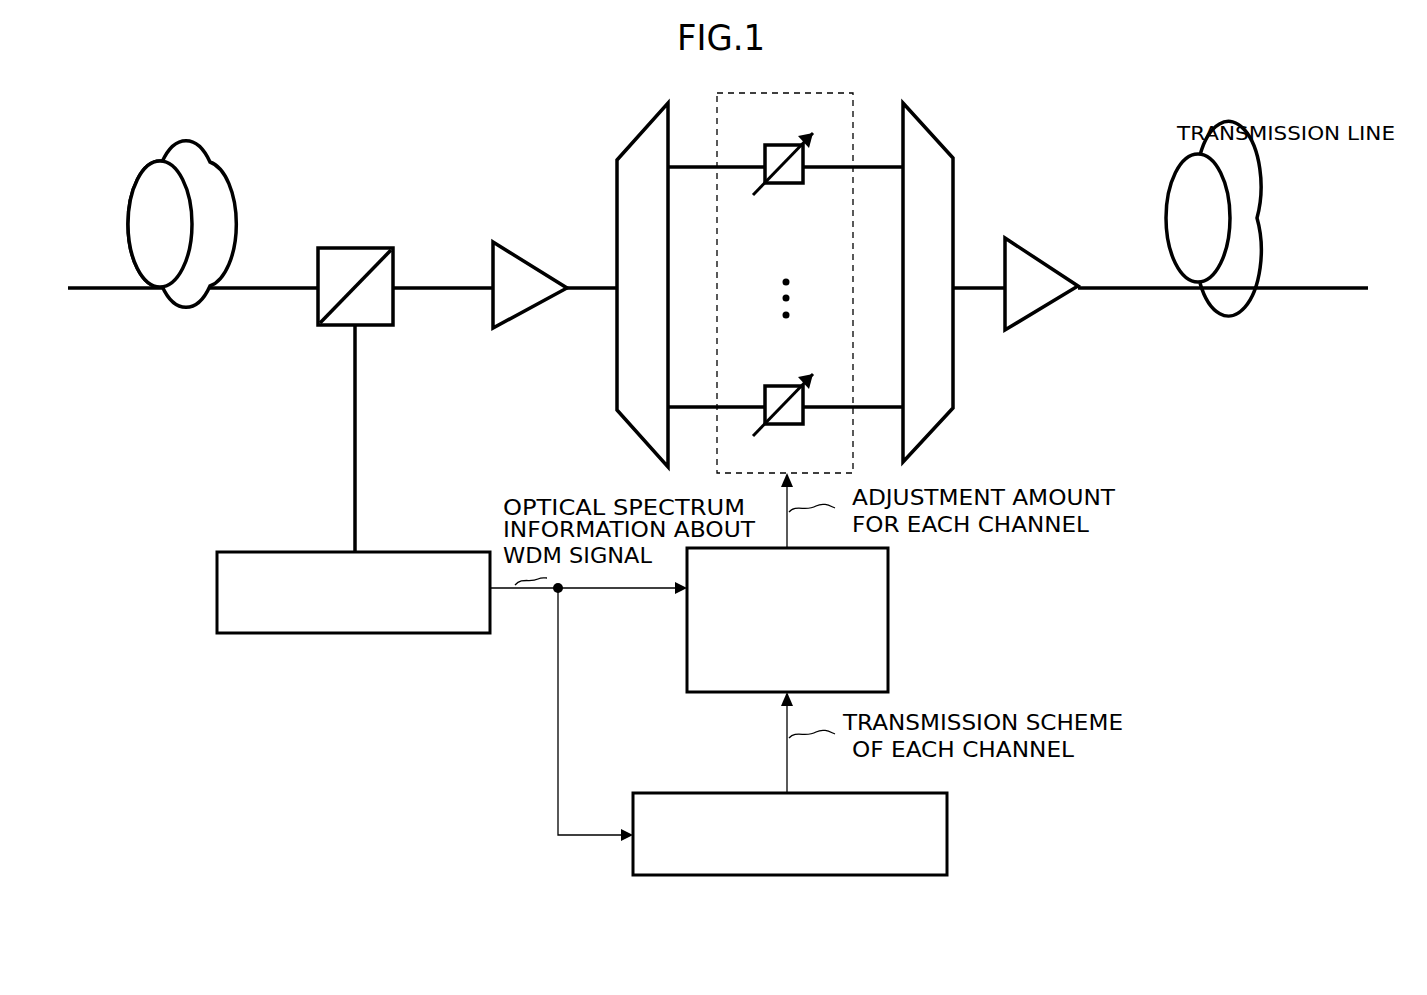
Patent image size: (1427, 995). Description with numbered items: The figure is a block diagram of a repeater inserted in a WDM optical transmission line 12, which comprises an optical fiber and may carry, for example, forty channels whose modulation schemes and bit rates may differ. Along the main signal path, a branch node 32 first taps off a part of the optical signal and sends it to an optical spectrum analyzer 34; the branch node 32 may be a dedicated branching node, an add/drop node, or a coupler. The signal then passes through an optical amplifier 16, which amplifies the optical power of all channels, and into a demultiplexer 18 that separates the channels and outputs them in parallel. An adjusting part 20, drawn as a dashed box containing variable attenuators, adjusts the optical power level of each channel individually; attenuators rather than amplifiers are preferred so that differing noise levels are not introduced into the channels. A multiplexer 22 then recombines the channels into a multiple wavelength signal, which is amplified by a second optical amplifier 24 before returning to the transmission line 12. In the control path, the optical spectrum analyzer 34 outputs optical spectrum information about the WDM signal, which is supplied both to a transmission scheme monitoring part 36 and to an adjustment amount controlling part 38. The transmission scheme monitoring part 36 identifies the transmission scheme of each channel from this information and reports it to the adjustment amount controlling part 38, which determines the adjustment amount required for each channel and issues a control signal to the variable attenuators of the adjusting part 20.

The transmission line 12 is at (96, 292).
The optical amplifier 16 is at (506, 252).
The demultiplexer 18 is at (666, 110).
The adjusting part 20 is at (836, 93).
The multiplexer 22 is at (906, 105).
The optical amplifier 24 is at (1006, 242).
The branch node 32 is at (318, 248).
The optical spectrum analyzer 34 is at (402, 552).
The transmission scheme monitoring part 36 is at (947, 840).
The adjustment amount controlling part 38 is at (888, 618).